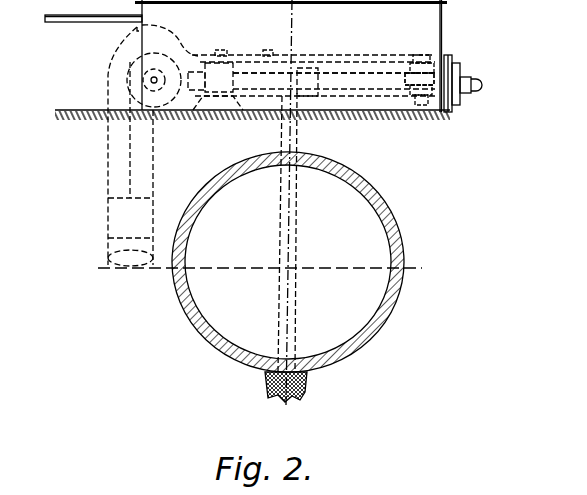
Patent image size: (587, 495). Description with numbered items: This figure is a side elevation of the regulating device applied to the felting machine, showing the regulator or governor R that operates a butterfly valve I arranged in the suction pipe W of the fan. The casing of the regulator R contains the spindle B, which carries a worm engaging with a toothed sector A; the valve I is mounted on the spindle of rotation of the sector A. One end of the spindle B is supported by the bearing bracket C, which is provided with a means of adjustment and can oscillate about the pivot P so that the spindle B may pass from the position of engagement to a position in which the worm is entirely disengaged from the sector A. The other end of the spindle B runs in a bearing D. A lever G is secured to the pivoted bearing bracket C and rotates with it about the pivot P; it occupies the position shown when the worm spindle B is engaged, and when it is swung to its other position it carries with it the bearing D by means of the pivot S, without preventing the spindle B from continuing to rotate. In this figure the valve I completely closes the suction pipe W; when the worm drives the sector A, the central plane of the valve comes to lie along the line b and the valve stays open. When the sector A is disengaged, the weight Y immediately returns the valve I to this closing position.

The lever G is at (93, 11).
The regulator R is at (443, 21).
The valve spindle axis b is at (295, 3).
The pivot S is at (244, 44).
The spindle B is at (346, 73).
The pivot P is at (421, 58).
The bearing bracket C is at (413, 76).
The toothed sector A is at (318, 96).
The bearing D is at (218, 86).
The weight Y is at (130, 232).
The butterfly valve I is at (260, 258).
The suction pipe W is at (398, 227).